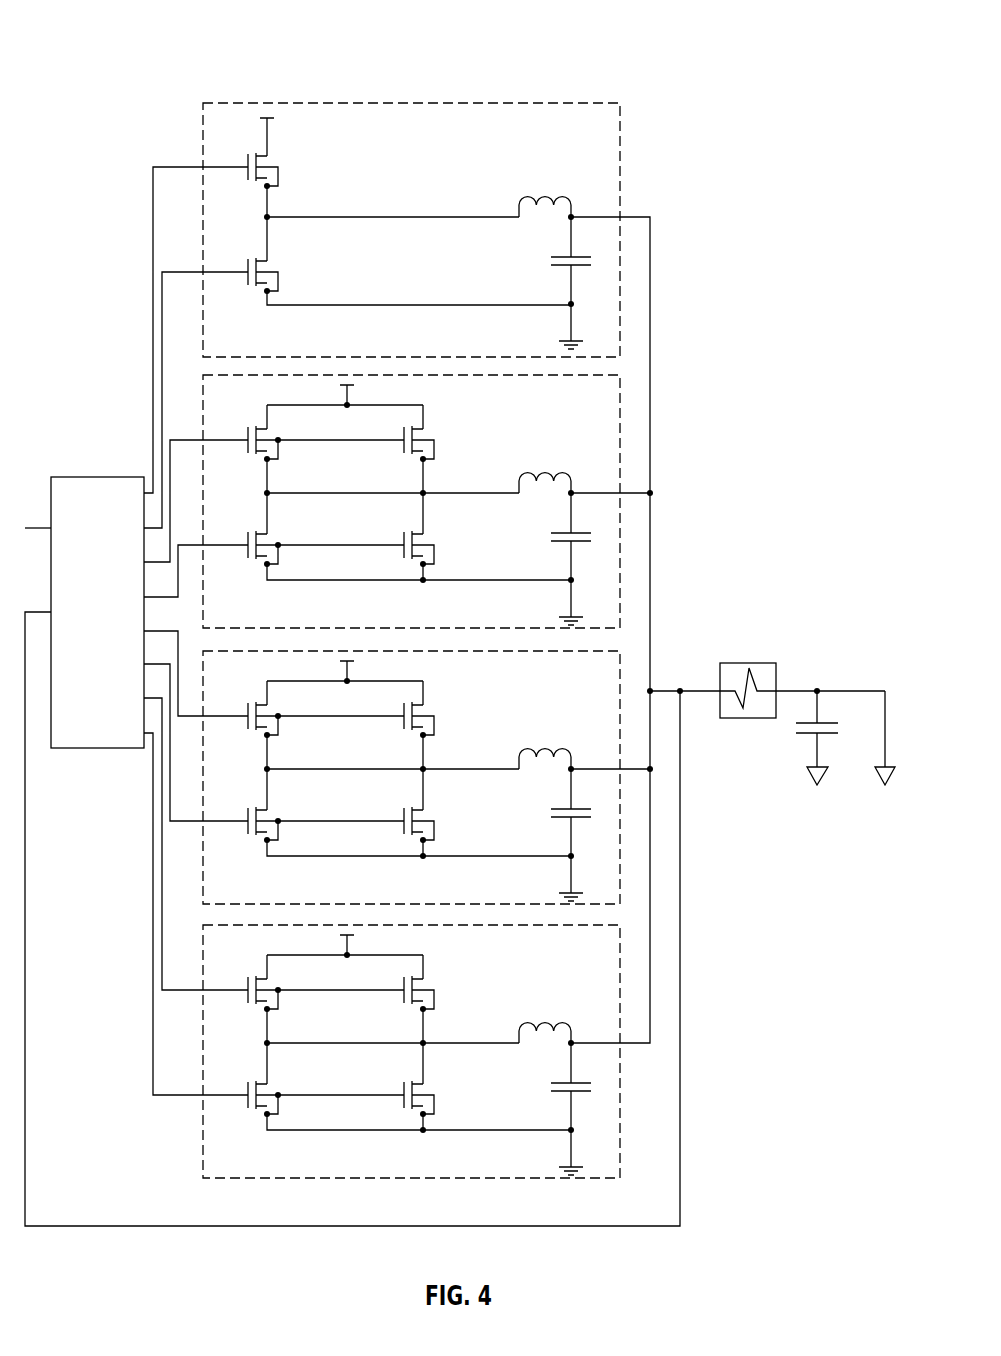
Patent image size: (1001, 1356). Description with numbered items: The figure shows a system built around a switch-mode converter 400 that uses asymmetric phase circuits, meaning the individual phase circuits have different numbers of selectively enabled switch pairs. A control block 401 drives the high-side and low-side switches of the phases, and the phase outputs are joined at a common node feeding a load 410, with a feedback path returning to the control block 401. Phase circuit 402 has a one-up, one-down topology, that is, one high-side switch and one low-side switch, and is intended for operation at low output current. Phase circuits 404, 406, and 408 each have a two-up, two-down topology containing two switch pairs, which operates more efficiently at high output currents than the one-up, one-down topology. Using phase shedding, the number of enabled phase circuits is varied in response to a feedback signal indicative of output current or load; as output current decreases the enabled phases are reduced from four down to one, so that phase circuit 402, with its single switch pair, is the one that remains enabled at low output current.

The switch-mode converter 400 is at (104, 42).
The control circuit 401 is at (117, 646).
The phase circuit 402 is at (248, 126).
The phase circuit 404 is at (248, 398).
The phase circuit 406 is at (248, 674).
The phase circuit 408 is at (248, 948).
The load 410 is at (744, 663).